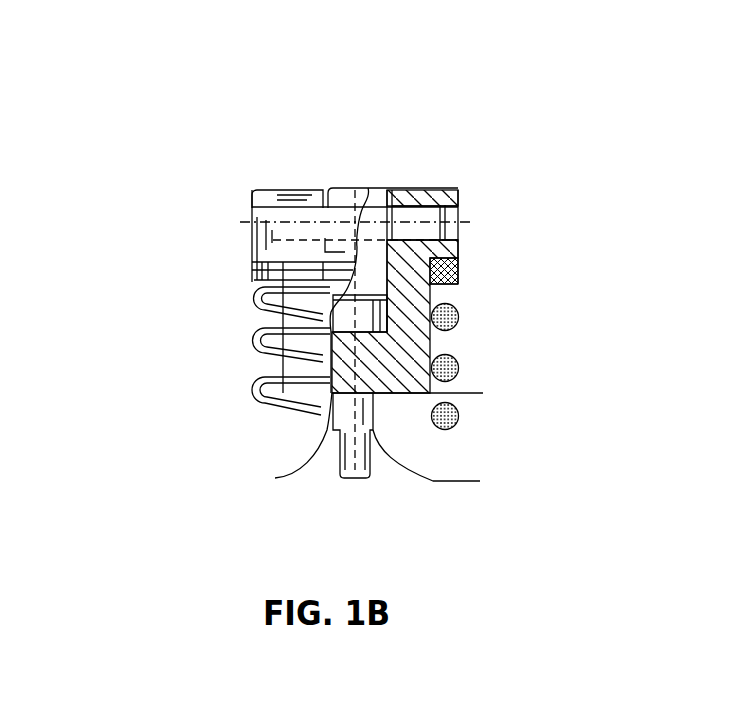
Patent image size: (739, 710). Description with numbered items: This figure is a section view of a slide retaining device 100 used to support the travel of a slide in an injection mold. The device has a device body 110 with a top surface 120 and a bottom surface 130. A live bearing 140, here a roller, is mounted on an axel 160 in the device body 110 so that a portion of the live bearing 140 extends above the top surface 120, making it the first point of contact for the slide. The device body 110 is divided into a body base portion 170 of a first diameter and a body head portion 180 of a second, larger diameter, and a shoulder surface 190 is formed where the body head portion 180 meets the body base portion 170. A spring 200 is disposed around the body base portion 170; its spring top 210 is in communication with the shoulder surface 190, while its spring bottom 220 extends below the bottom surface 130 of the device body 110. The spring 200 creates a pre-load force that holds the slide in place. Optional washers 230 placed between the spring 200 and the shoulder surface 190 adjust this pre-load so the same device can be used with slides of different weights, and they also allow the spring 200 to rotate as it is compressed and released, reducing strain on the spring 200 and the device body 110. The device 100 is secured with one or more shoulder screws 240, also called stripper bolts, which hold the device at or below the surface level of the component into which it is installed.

The slide retaining device 100 is at (332, 95).
The device body 110 is at (252, 256).
The top surface 120 is at (264, 190).
The bottom surface 130 is at (275, 478).
The live bearing 140 is at (368, 188).
The axel 160 is at (460, 210).
The body base portion 170 is at (483, 393).
The body head portion 180 is at (252, 237).
The shoulder surface 190 is at (459, 247).
The spring 200 is at (253, 352).
The spring top 210 is at (253, 287).
The spring bottom 220 is at (447, 428).
The washers 230 is at (458, 284).
The shoulder screws 240 is at (480, 481).